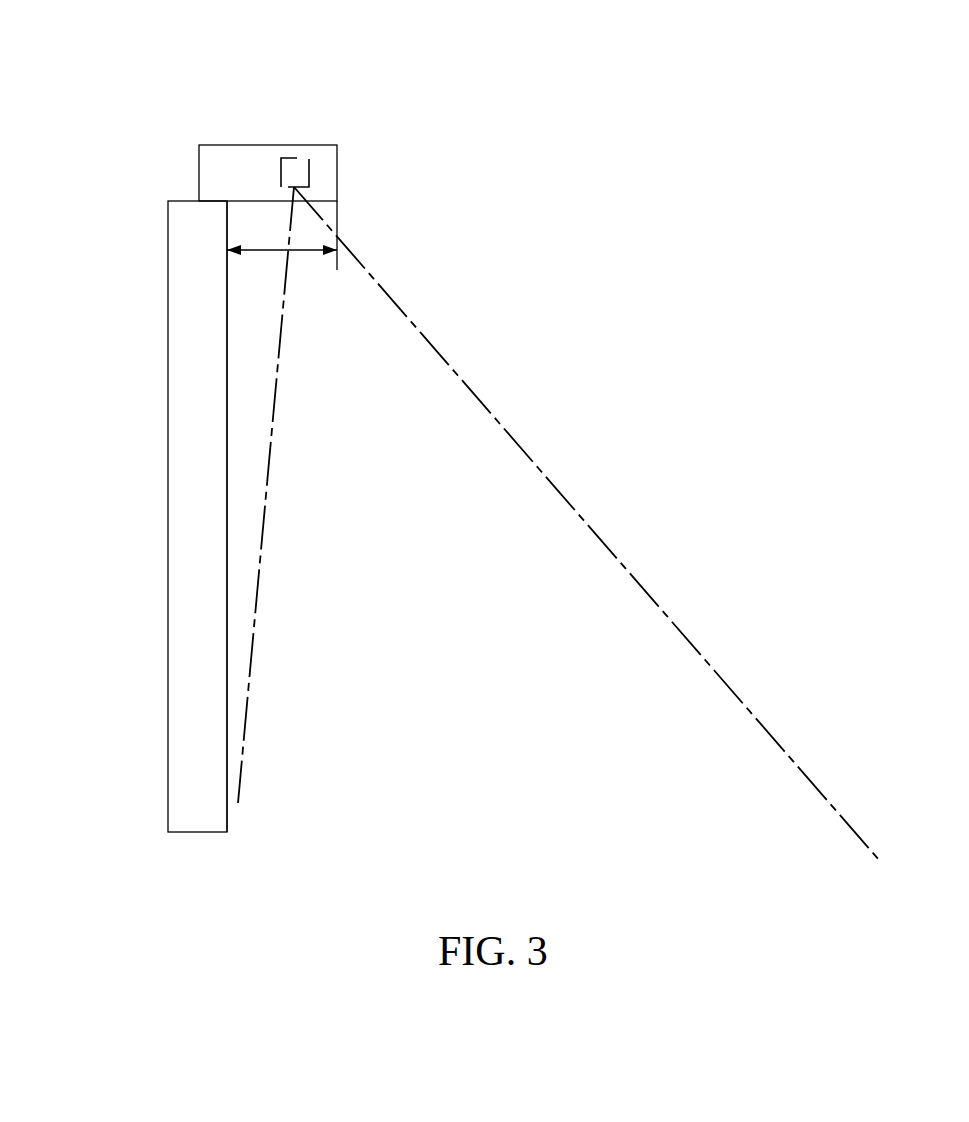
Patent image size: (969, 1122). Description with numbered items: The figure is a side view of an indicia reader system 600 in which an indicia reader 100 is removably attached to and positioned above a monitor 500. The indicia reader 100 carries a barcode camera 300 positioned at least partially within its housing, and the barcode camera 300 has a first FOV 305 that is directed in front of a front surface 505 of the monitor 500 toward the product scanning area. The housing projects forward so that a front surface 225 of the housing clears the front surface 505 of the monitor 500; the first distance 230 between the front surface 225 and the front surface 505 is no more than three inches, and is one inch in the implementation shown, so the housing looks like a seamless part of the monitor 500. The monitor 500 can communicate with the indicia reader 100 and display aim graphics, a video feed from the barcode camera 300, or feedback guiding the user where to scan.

The indicia reader system 600 is at (124, 74).
The indicia reader 100 is at (268, 132).
The front surface of housing 225 is at (338, 172).
The barcode camera 300 is at (302, 158).
The first distance 230 is at (313, 253).
The monitor 500 is at (155, 438).
The front surface of monitor 505 is at (227, 449).
The first FOV 305 is at (597, 511).